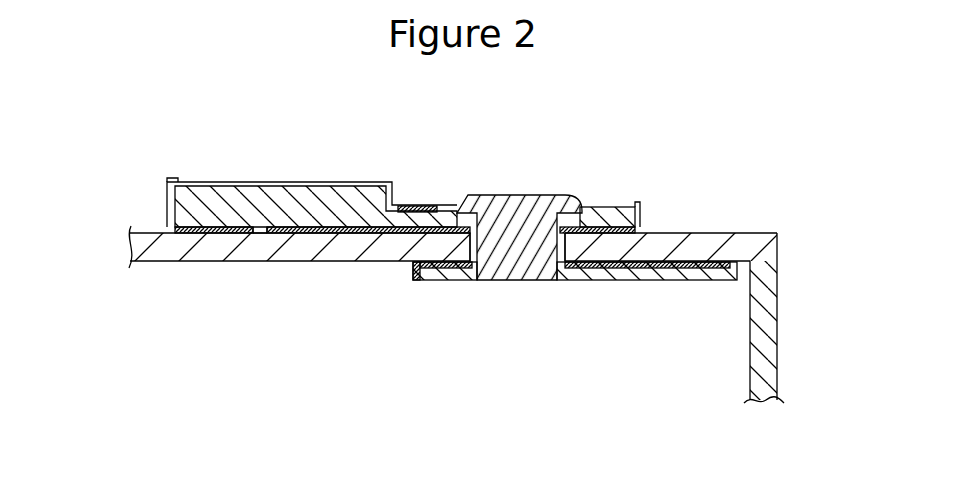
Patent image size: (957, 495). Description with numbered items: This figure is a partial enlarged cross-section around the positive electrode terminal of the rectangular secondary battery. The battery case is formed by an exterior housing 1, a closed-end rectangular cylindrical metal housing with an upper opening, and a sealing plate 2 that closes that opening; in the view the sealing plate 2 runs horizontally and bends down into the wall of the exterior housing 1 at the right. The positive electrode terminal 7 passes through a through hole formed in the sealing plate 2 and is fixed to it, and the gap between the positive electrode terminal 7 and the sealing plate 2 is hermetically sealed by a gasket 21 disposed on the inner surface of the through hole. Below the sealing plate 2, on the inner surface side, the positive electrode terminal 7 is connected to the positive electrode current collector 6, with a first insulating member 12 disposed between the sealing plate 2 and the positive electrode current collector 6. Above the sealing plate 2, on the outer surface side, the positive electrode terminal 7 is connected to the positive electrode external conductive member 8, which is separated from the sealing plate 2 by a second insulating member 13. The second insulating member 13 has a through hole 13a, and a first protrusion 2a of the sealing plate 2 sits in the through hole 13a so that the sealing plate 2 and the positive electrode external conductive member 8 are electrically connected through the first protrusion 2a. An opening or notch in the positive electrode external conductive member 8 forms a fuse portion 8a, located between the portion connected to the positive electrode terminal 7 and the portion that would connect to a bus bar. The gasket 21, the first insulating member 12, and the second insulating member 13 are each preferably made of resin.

The exterior housing 1 is at (778, 306).
The sealing plate 2 is at (697, 233).
The first protrusion 2a is at (283, 227).
The positive electrode current collector 6 is at (698, 280).
The positive electrode terminal 7 is at (516, 195).
The positive electrode external conductive member 8 is at (325, 182).
The fuse portion 8a is at (427, 205).
The first insulating member 12 is at (650, 268).
The second insulating member 13 is at (357, 233).
The through hole 13a is at (262, 232).
The gasket 21 is at (566, 250).